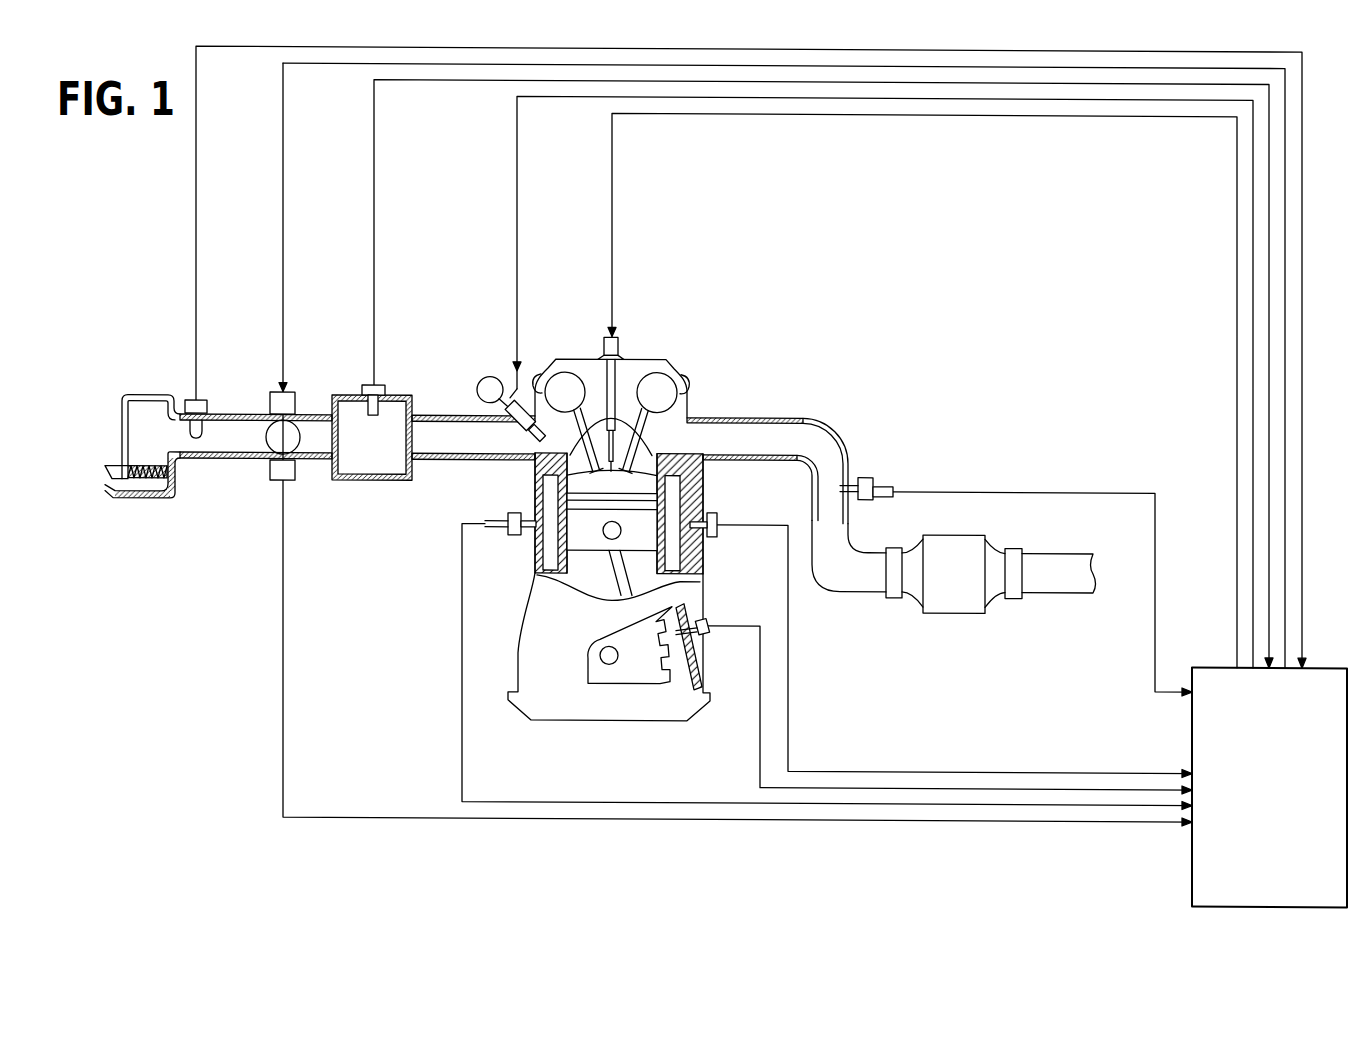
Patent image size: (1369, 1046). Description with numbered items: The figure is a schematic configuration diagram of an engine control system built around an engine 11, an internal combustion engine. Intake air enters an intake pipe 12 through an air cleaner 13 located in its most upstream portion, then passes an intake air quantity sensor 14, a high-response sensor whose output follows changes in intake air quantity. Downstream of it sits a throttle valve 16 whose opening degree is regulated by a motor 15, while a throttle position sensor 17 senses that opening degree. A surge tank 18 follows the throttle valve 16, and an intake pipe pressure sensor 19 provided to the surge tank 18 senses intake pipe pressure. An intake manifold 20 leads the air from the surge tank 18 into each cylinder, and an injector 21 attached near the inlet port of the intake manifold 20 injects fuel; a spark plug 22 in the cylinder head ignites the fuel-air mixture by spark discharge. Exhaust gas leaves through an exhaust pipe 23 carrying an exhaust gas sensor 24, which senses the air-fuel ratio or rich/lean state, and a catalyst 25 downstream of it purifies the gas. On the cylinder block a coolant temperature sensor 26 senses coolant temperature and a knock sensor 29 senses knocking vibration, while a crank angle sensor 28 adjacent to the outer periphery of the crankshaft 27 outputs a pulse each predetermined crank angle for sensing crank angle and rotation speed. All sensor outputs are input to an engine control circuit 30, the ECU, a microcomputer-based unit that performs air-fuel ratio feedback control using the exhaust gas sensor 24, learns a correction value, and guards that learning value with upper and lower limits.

The engine 11 is at (660, 360).
The intake pipe 12 is at (238, 412).
The air cleaner 13 is at (150, 477).
The intake air quantity sensor 14 is at (190, 398).
The motor 15 is at (272, 390).
The throttle valve 16 is at (270, 437).
The throttle position sensor 17 is at (292, 479).
The surge tank 18 is at (370, 478).
The intake pipe pressure sensor 19 is at (365, 383).
The intake manifold 20 is at (452, 412).
The injector 21 is at (513, 386).
The spark plug 22 is at (620, 452).
The exhaust pipe 23 is at (796, 410).
The exhaust gas sensor 24 is at (866, 473).
The catalyst 25 is at (950, 530).
The coolant temperature sensor 26 is at (512, 533).
The crankshaft 27 is at (610, 662).
The crank angle sensor 28 is at (710, 616).
The knock sensor 29 is at (717, 514).
The engine control circuit 30 is at (1190, 858).